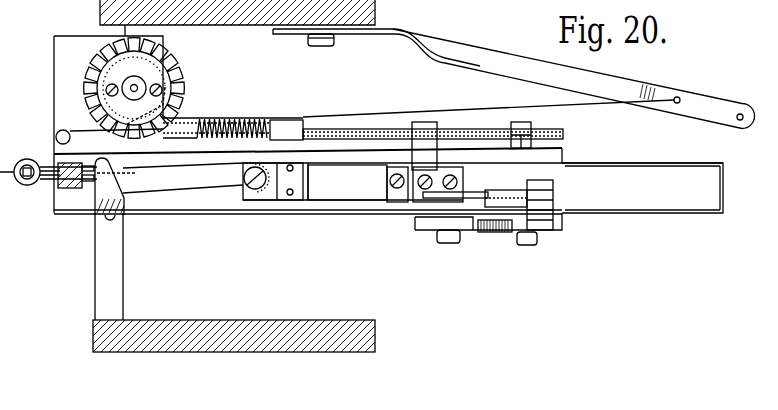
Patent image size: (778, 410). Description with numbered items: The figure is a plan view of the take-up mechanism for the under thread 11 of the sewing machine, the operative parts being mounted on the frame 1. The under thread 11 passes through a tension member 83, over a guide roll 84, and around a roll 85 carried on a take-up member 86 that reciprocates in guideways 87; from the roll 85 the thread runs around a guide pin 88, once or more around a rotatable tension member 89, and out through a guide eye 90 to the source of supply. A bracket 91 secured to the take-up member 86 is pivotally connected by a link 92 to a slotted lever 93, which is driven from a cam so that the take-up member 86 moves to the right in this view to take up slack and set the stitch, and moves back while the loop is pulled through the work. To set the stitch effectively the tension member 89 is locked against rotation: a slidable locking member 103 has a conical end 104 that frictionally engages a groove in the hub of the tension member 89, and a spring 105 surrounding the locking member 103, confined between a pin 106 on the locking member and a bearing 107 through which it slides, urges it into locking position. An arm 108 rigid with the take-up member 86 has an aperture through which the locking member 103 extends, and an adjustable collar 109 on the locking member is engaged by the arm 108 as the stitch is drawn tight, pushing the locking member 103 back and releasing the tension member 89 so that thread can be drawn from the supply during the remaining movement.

The frame 1 is at (137, 353).
The under thread 11 is at (390, 115).
The tension member 83 is at (30, 160).
The guide roll 84 is at (72, 185).
The roll 85 is at (252, 192).
The take-up member 86 is at (349, 188).
The guideways 87 is at (378, 214).
The guide pin 88 is at (60, 132).
The rotatable tension member 89 is at (175, 72).
The guide eye 90 is at (679, 98).
The bracket 91 is at (445, 202).
The link 92 is at (482, 200).
The lever 93 is at (508, 230).
The slidable locking member 103 is at (323, 128).
The conical end 104 is at (176, 118).
The spring 105 is at (237, 118).
The pin 106 is at (200, 119).
The bearing 107 is at (281, 120).
The arm 108 is at (432, 150).
The adjustable collar 109 is at (514, 124).